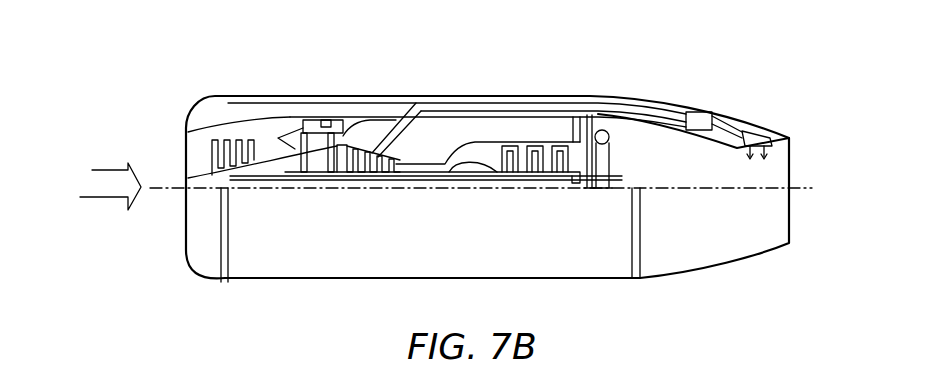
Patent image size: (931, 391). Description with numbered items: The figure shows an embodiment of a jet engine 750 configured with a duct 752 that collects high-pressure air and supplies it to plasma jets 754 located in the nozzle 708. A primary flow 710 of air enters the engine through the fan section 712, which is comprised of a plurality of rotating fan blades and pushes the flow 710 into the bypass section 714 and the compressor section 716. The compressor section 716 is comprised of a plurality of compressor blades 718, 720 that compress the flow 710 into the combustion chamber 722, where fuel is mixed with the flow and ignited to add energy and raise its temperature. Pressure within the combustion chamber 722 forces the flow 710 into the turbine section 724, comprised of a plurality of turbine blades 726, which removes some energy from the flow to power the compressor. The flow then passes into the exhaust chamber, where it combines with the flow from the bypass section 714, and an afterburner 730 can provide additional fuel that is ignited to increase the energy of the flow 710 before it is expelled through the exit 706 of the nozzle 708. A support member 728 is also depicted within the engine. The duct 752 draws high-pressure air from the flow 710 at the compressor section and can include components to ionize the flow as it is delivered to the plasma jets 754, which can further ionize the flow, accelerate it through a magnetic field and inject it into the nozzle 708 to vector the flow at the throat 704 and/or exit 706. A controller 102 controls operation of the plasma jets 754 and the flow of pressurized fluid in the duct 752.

The controller 102 is at (702, 116).
The throat 704 is at (733, 152).
The exit 706 is at (796, 167).
The nozzle 708 is at (730, 212).
The primary flow 710 is at (115, 163).
The fan section 712 is at (218, 136).
The bypass section 714 is at (288, 123).
The compressor section 716 is at (292, 132).
The compressor blades 718 is at (356, 147).
The compressor blades 720 is at (392, 134).
The combustion chamber 722 is at (449, 160).
The turbine section 724 is at (492, 165).
The turbine blades 726 is at (575, 179).
The strut 728 is at (584, 114).
The afterburner 730 is at (603, 129).
The engine 750 is at (708, 44).
The duct 752 is at (504, 110).
The plasma jets 754 is at (760, 135).